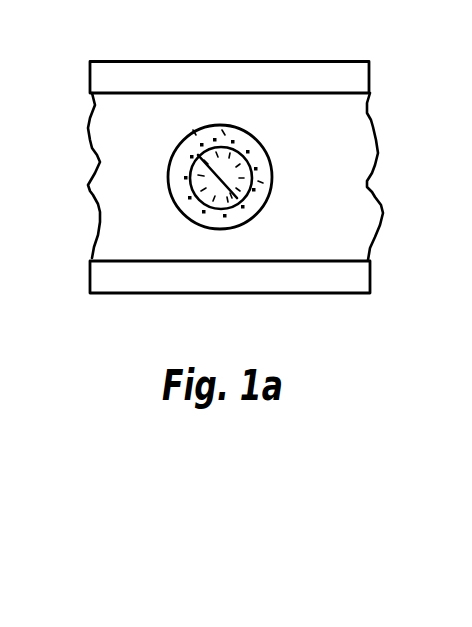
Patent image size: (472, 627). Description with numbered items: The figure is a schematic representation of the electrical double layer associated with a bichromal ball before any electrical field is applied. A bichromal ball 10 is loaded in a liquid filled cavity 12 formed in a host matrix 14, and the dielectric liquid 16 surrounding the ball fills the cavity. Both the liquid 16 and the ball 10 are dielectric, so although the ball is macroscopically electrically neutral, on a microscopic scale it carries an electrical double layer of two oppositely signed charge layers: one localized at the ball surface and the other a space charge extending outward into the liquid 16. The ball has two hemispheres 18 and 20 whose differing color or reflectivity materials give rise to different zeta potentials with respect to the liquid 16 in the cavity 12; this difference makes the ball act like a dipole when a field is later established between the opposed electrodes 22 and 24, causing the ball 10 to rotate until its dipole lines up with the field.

The bichromal ball 10 is at (186, 159).
The liquid filled cavity 12 is at (262, 158).
The host matrix 14 is at (353, 123).
The dielectric liquid 16 is at (202, 143).
The hemisphere 18 is at (243, 207).
The hemisphere 20 is at (235, 148).
The electrode 22 is at (267, 78).
The electrode 24 is at (303, 278).